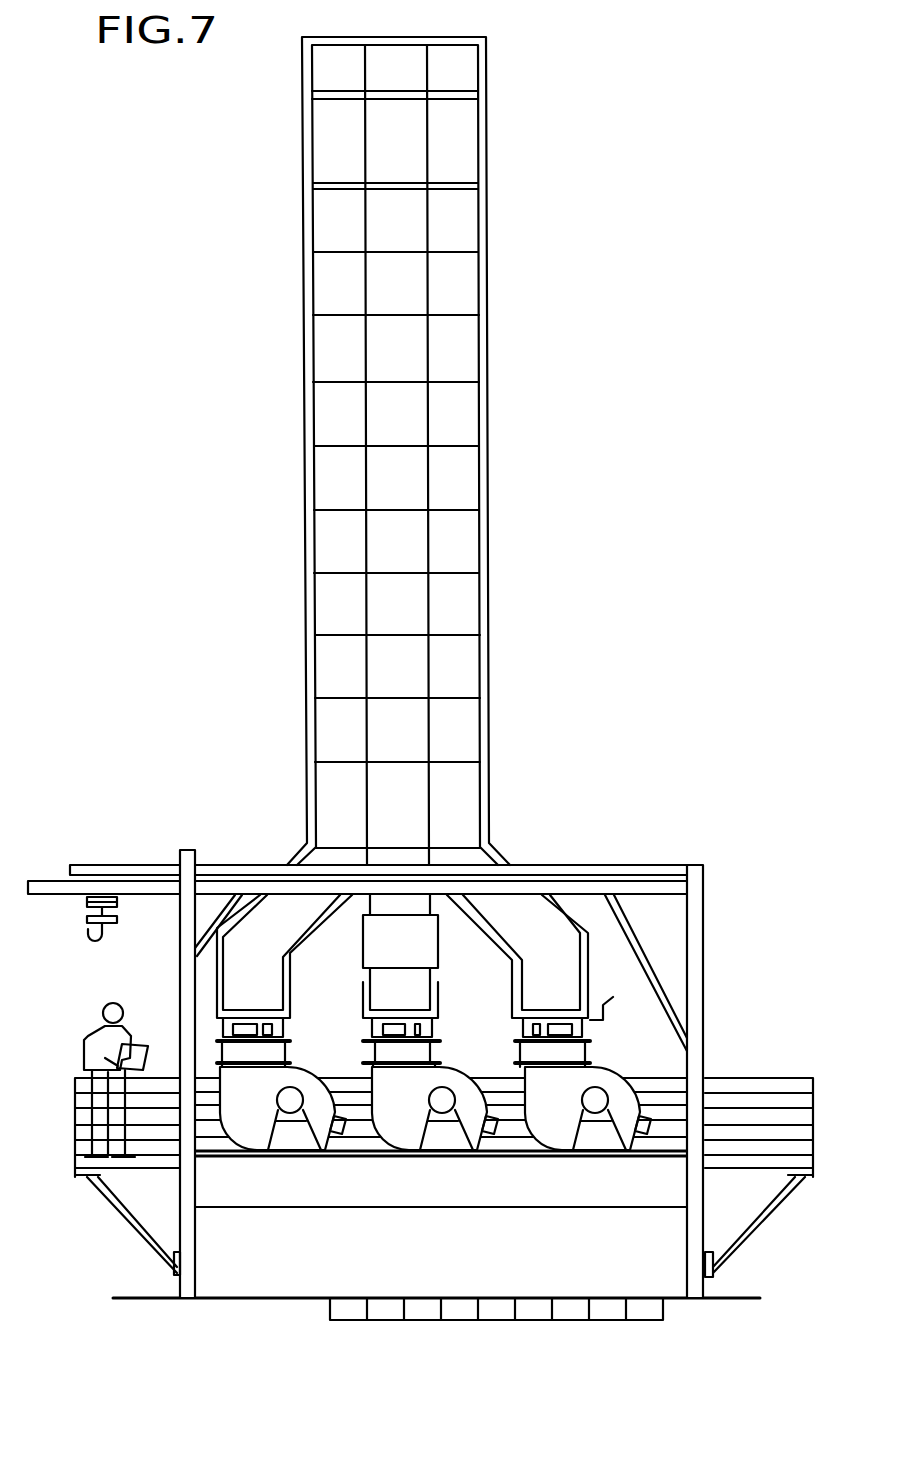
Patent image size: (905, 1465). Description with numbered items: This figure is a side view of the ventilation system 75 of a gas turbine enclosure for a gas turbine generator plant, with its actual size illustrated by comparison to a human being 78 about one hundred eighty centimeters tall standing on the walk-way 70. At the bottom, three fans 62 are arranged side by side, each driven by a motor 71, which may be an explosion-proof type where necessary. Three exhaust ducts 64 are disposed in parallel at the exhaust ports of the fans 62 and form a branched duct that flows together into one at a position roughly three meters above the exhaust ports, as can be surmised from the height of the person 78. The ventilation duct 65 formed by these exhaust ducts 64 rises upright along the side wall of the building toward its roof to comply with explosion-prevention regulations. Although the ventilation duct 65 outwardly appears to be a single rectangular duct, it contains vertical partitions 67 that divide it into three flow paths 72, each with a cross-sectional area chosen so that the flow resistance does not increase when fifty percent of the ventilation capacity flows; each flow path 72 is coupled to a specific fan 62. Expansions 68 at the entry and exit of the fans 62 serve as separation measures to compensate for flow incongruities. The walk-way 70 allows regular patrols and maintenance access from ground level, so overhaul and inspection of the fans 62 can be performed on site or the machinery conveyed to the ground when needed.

The fan 62 is at (317, 1123).
The exhaust duct 64 is at (582, 918).
The ventilation duct 65 is at (487, 530).
The vertical partition 67 is at (366, 272).
The expansion 68 is at (584, 1053).
The walk-way 70 is at (75, 1157).
The motor 71 is at (450, 1078).
The flow path 72 is at (345, 412).
The ventilation system 75 is at (580, 167).
The human being 78 is at (93, 1045).